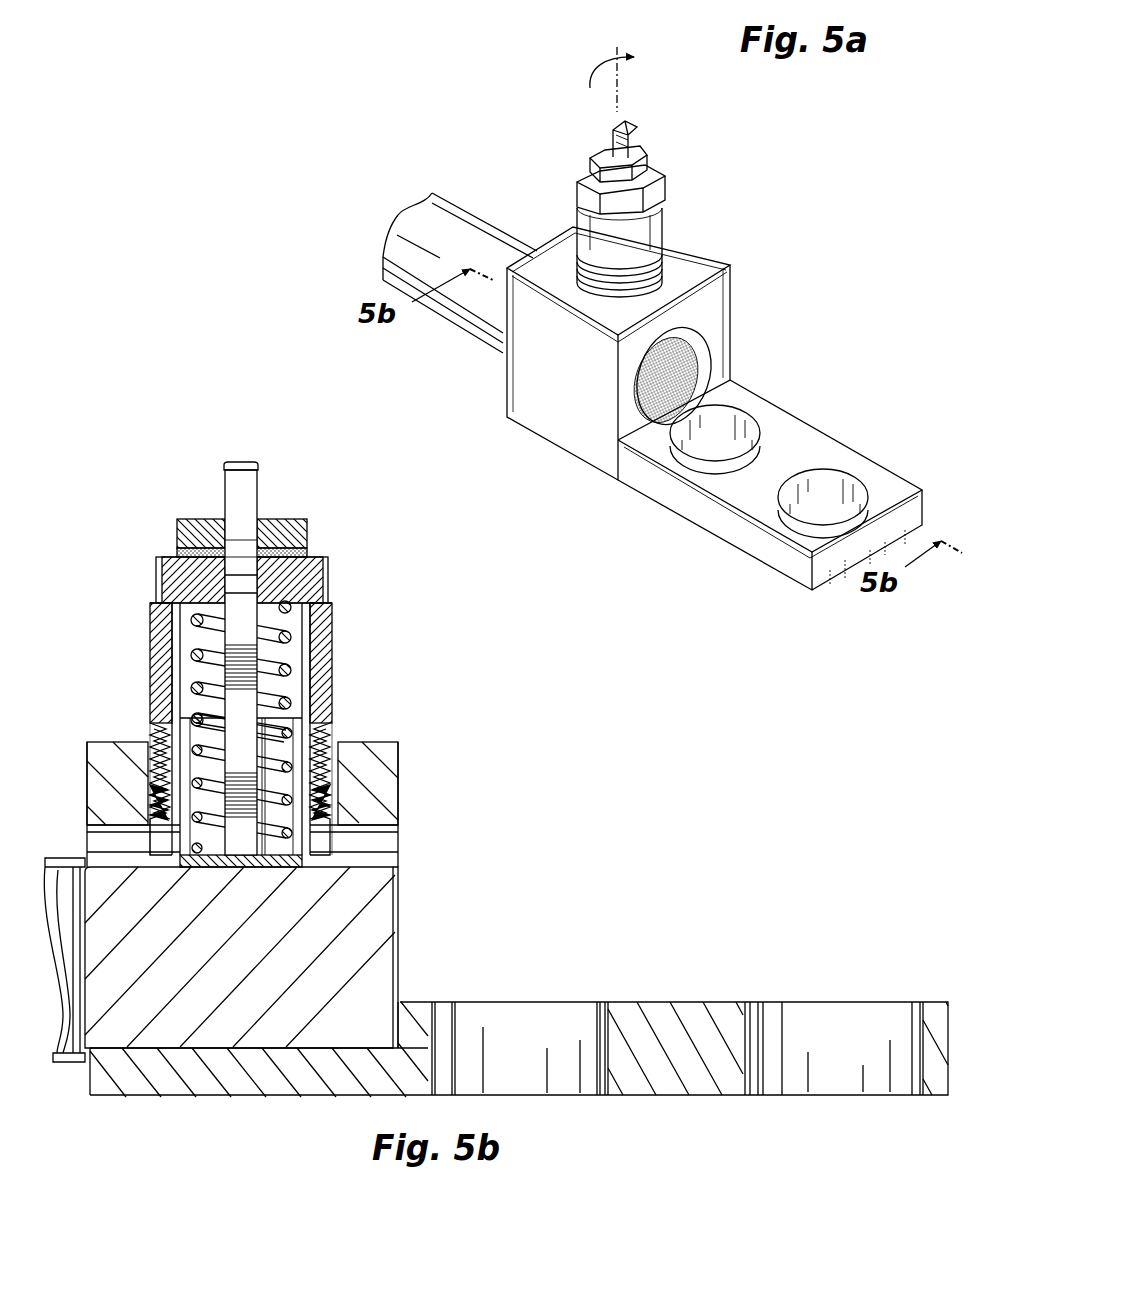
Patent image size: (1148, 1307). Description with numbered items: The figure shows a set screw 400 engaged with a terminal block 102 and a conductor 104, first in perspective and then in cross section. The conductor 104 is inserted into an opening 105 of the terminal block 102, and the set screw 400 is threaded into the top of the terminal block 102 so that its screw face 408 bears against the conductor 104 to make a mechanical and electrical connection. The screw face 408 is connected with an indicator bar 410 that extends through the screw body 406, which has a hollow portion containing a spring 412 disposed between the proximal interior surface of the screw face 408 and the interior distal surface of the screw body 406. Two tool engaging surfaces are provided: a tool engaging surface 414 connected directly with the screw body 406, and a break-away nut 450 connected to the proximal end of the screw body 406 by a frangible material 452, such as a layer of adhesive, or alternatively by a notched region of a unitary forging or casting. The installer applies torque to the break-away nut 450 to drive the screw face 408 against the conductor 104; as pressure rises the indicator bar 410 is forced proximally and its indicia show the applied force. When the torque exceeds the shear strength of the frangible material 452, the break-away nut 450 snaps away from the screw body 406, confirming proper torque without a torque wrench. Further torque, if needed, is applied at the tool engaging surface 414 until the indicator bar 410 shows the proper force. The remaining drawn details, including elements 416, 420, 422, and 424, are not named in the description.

In FIG. 5A, the terminal block 102 is at (852, 440).
In FIG. 5B, the terminal block 102 is at (660, 955).
In FIG. 5A, the conductor 104 is at (730, 303).
In FIG. 5B, the conductor 104 is at (386, 973).
In FIG. 5A, the opening 105 is at (707, 368).
In FIG. 5A, the set screw 400 is at (564, 184).
In FIG. 5B, the set screw 400 is at (259, 594).
In FIG. 5B, the screw body 406 is at (332, 652).
In FIG. 5B, the screw face 408 is at (343, 820).
In FIG. 5B, the indicator bar 410 is at (247, 503).
In FIG. 5B, the spring 412 is at (194, 681).
In FIG. 5B, the tool engaging surface 414 is at (327, 586).
In FIG. 5B, the inner sleeve 416 is at (340, 723).
In FIG. 5B, the pin collar 420 is at (224, 533).
In FIG. 5B, the pin groove 422 is at (244, 557).
In FIG. 5B, the pin tip 424 is at (260, 465).
In FIG. 5A, the break-away nut 450 is at (643, 153).
In FIG. 5B, the break-away nut 450 is at (177, 550).
In FIG. 5B, the frangible material 452 is at (177, 556).